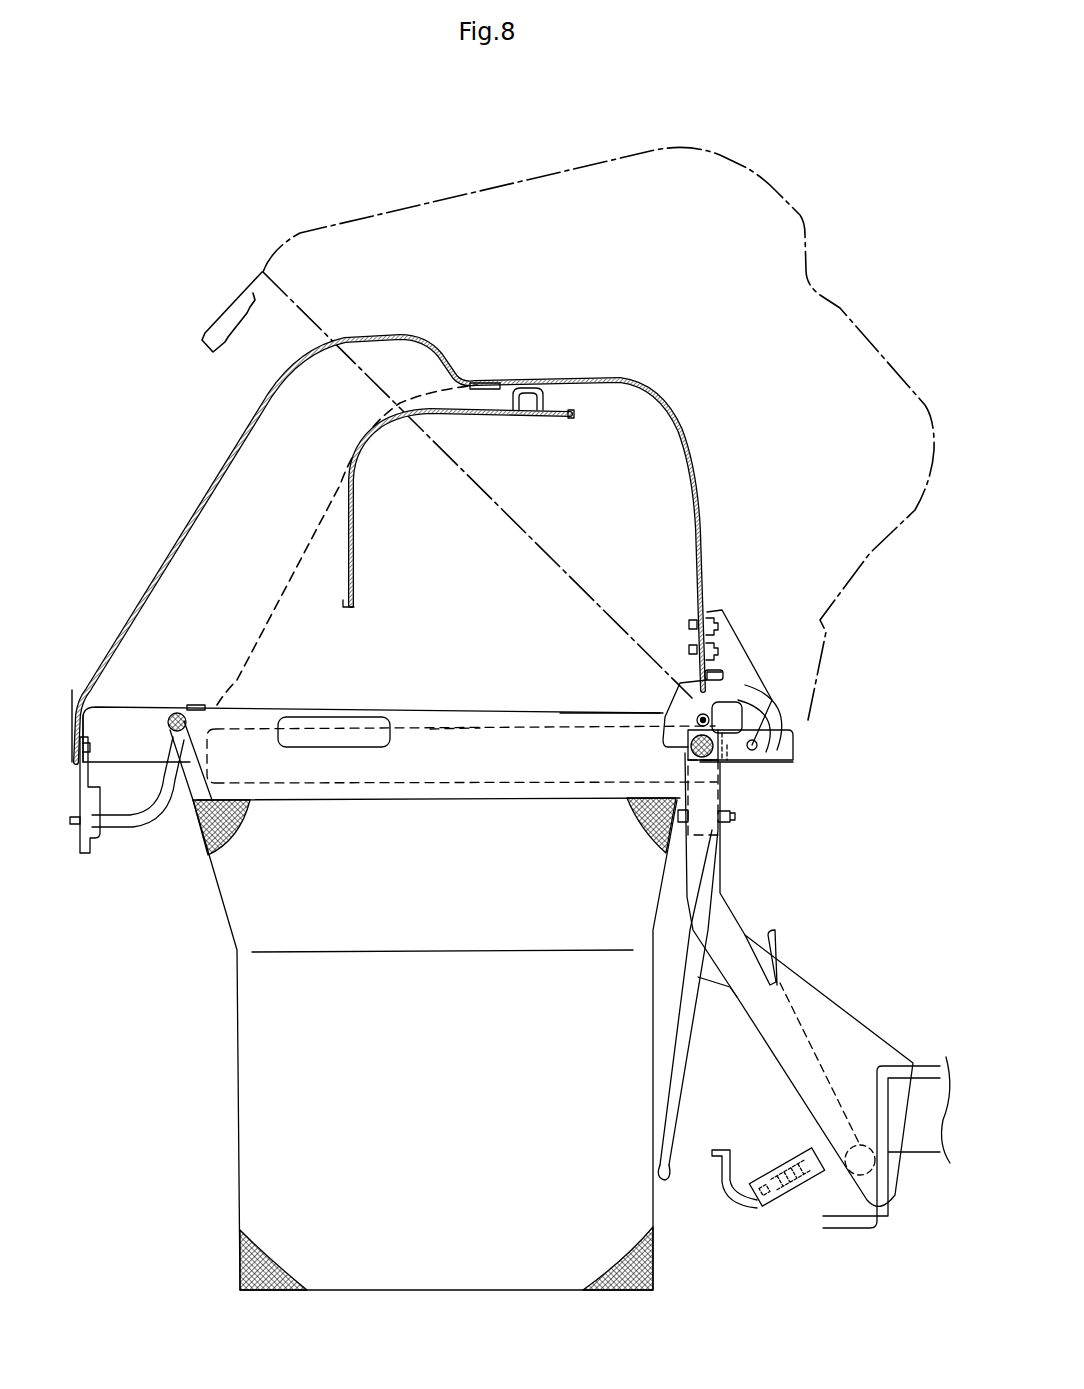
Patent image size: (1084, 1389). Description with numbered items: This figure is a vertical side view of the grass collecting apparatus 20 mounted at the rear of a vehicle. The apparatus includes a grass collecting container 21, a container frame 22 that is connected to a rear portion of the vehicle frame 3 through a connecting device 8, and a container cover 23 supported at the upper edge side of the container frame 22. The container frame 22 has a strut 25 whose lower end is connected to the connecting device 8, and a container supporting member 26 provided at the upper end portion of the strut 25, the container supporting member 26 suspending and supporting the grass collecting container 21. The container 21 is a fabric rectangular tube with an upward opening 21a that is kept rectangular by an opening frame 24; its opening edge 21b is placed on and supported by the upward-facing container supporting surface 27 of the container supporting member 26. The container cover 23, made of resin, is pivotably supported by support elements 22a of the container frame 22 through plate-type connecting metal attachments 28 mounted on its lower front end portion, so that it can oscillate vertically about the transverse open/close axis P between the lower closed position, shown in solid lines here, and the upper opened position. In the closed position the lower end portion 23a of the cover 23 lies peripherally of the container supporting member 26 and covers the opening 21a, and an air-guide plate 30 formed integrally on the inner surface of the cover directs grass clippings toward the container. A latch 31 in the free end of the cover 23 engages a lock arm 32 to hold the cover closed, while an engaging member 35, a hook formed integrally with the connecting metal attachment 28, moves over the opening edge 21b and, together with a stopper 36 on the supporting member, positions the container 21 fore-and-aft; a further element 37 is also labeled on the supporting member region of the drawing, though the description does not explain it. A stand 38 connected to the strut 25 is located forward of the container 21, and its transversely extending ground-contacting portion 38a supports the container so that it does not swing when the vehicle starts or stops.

The vehicle frame 3 is at (925, 1065).
The connecting device 8 is at (776, 1078).
The grass collecting apparatus 20 is at (706, 362).
The grass collecting container 21 is at (262, 1082).
The opening 21a is at (404, 746).
The opening edge 21b is at (530, 745).
The container frame 22 is at (656, 895).
The support element 22a is at (778, 765).
The container cover 23 is at (470, 192).
The lower end portion 23a is at (74, 728).
The opening frame 24 is at (178, 705).
The strut 25 is at (728, 918).
The container supporting member 26 is at (740, 724).
The container supporting surface 27 is at (450, 745).
The connecting metal attachment 28 is at (735, 648).
The air-guide plate 30 is at (392, 432).
The latch 31 is at (88, 852).
The lock arm 32 is at (140, 822).
The engaging member 35 is at (665, 705).
The stopper 36 is at (745, 718).
The pad 37 is at (317, 748).
The stand 38 is at (668, 1053).
The ground-contacting portion 38a is at (668, 1178).
The open/close axis P is at (765, 745).